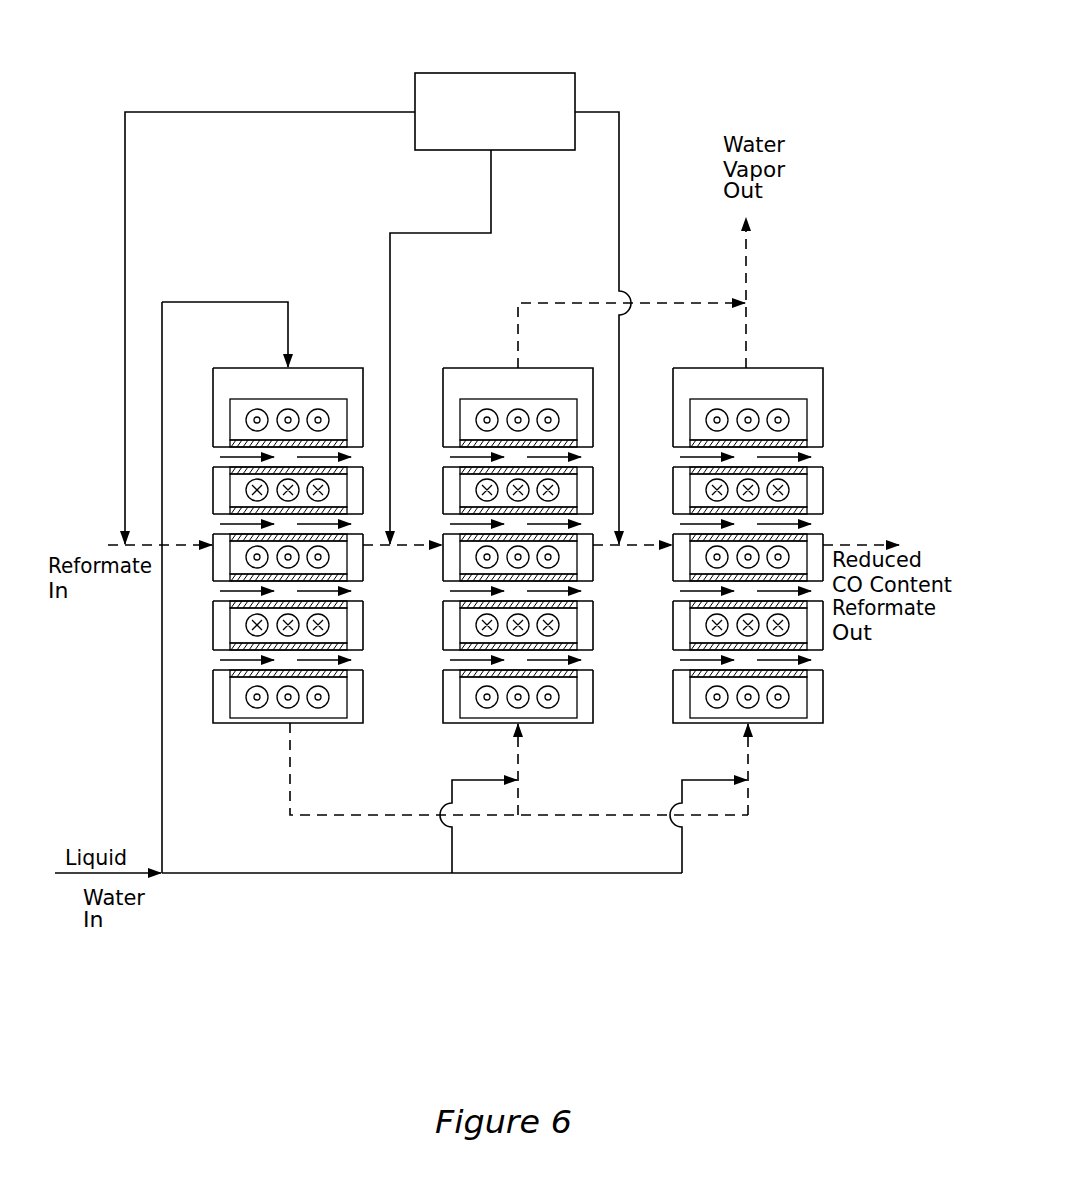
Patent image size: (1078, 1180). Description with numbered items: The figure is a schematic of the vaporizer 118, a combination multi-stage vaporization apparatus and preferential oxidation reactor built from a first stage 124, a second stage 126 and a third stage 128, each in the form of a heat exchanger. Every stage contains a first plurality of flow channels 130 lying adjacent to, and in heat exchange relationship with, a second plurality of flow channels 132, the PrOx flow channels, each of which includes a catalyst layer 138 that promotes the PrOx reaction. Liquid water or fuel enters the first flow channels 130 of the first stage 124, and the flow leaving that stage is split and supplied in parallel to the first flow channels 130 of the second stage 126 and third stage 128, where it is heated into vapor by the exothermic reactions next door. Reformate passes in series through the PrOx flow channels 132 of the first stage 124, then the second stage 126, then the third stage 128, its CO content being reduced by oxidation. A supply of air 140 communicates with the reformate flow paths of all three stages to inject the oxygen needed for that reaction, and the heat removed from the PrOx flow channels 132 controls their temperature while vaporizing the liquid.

The vaporizer 118 is at (377, 944).
The first stage 124 is at (343, 734).
The second stage 126 is at (573, 734).
The third stage 128 is at (803, 734).
The first plurality of flow channels 130 is at (298, 417).
The second plurality of flow channels 132 is at (349, 602).
The catalyst layer 138 is at (235, 479).
The supply of air 140 is at (550, 80).